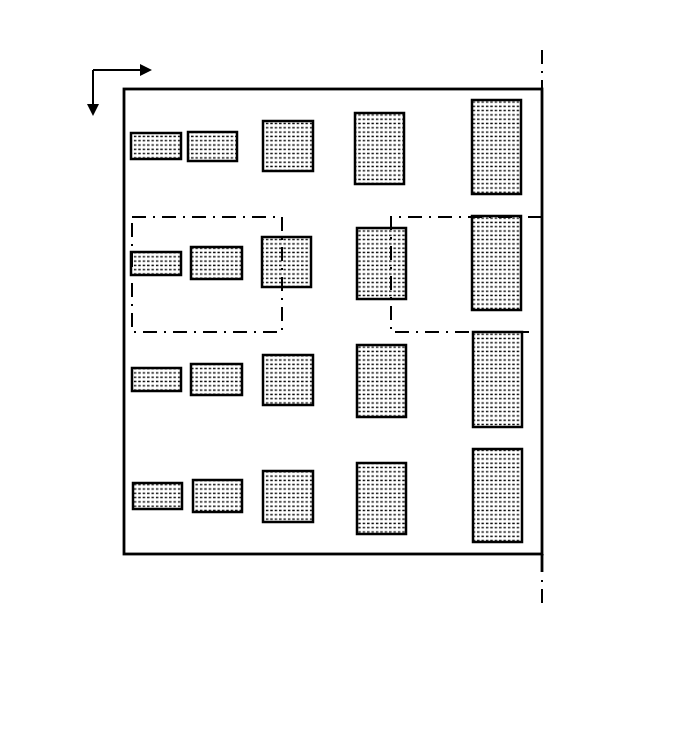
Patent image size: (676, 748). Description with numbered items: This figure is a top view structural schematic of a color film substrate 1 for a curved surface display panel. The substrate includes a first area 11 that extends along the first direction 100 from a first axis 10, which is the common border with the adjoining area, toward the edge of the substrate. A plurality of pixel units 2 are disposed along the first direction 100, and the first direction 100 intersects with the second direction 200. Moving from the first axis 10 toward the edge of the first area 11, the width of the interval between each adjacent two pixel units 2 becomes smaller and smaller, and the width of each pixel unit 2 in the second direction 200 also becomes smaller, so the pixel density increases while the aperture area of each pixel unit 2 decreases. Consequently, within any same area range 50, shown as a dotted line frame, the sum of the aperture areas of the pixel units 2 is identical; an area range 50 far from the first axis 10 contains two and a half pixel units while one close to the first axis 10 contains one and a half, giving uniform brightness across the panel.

The color film substrate 1 is at (617, 39).
The first axis 10 is at (535, 307).
The first area 11 is at (315, 554).
The pixel unit 2 is at (157, 380).
The area range 50 is at (185, 213).
The first direction 100 is at (122, 53).
The second direction 200 is at (64, 91).